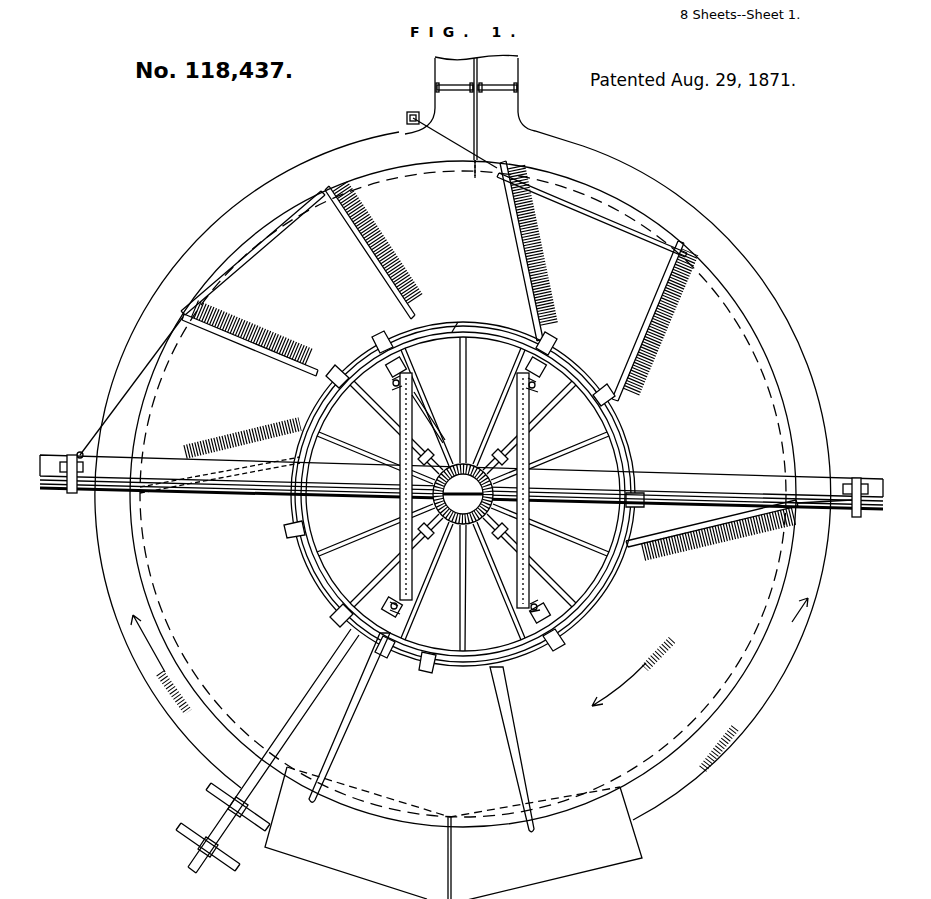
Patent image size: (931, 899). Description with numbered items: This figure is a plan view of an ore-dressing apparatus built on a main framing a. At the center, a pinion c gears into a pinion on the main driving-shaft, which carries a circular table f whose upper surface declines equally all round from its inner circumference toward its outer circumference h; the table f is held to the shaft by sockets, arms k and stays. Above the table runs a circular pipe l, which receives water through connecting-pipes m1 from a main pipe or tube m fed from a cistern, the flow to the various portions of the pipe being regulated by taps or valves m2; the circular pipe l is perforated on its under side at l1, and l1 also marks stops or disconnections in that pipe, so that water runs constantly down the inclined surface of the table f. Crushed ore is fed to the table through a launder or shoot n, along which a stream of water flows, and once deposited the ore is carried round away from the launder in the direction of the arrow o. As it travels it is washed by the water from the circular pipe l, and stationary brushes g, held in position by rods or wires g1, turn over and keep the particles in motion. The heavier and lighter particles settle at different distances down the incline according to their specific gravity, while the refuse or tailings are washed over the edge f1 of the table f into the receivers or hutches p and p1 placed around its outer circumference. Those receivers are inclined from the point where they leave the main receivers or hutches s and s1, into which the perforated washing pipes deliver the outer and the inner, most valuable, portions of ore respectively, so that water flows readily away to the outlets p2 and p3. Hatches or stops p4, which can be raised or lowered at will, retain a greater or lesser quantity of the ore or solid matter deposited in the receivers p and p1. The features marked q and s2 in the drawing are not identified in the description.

The main framing a is at (461, 486).
The pinion c is at (463, 494).
The circular table f is at (468, 440).
The edge of the table f1 is at (253, 253).
The stationary brushes g is at (469, 341).
The rods or wires g1 is at (464, 322).
The outer circumference h is at (462, 490).
The arms k is at (463, 494).
The circular pipe l is at (464, 492).
The perforations / stops in the circular pipe l1 is at (457, 320).
The main pipe or tube m is at (466, 490).
The connecting-pipes m1 is at (463, 474).
The taps or valves m2 is at (475, 495).
The launder or shoot n is at (267, 751).
The arrow o is at (632, 673).
The receiver or hutch p is at (707, 483).
The receiver or hutch p1 is at (451, 460).
The outlet p2 is at (603, 193).
The outlet p3 is at (441, 118).
The hatches or stops p4 is at (476, 81).
The pivot block q is at (413, 117).
The receiver or hutch s is at (554, 843).
The receiver or hutch s1 is at (442, 833).
The hopper rod s2 is at (421, 732).